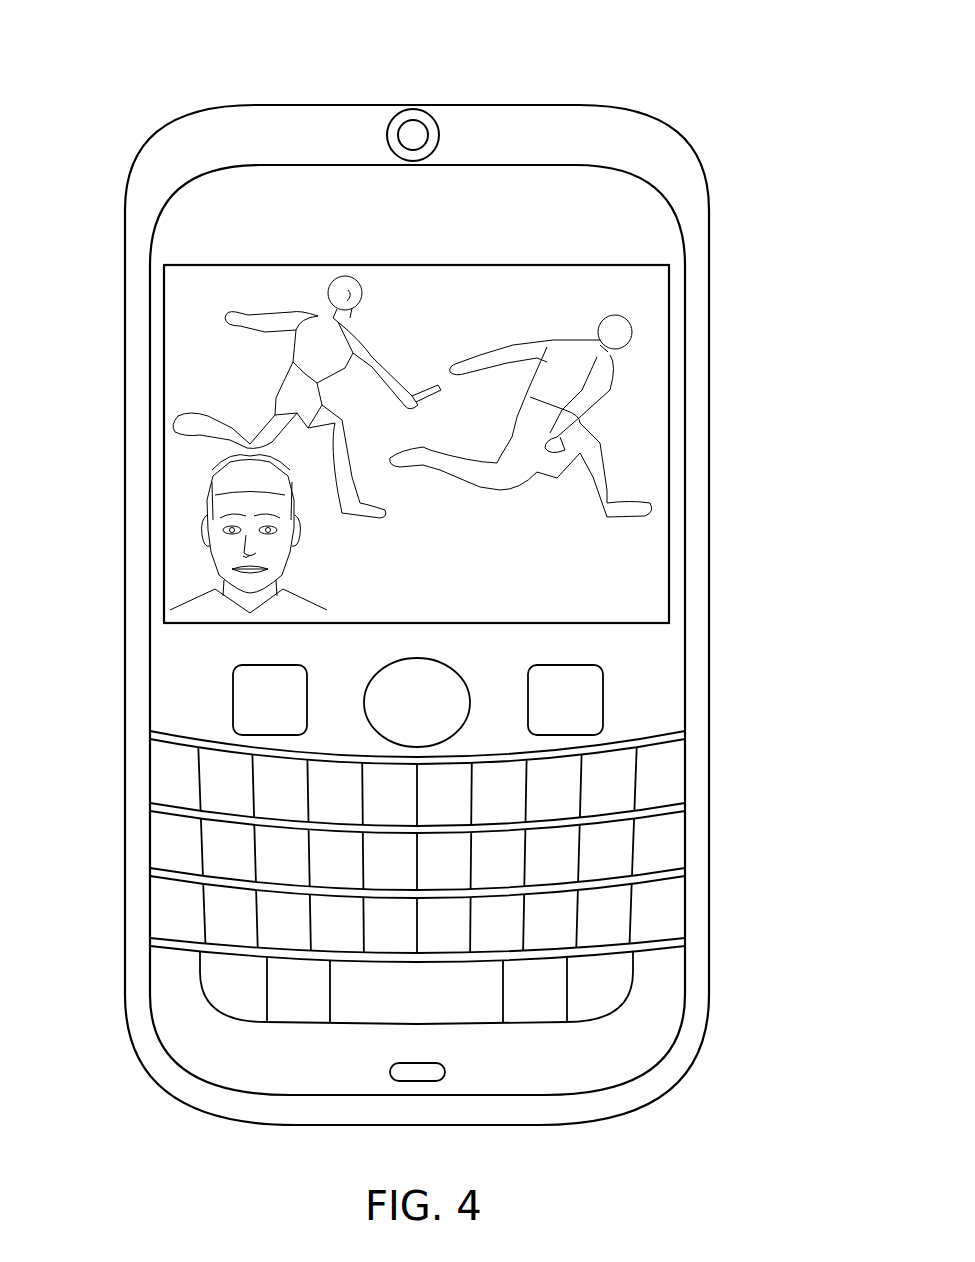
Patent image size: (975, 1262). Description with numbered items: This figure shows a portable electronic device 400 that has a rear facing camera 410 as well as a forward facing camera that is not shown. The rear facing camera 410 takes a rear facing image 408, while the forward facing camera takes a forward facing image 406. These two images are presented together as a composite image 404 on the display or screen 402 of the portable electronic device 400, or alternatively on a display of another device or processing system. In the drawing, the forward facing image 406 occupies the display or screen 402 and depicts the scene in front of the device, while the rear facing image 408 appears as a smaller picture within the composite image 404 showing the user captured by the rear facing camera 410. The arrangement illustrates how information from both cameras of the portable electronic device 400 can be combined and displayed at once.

The portable electronic device 400 is at (418, 578).
The display or screen 402 is at (417, 264).
The composite image 404 is at (275, 277).
The forward facing image 406 is at (220, 355).
The rear facing image 408 is at (306, 541).
The rear facing camera 410 is at (413, 107).